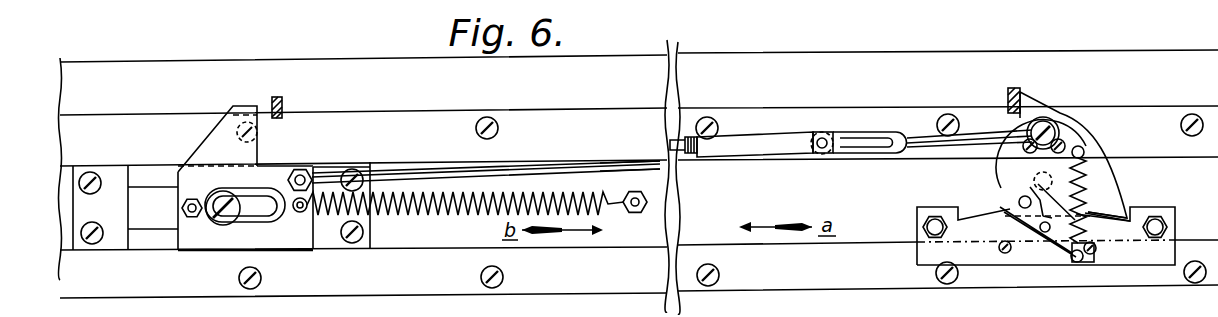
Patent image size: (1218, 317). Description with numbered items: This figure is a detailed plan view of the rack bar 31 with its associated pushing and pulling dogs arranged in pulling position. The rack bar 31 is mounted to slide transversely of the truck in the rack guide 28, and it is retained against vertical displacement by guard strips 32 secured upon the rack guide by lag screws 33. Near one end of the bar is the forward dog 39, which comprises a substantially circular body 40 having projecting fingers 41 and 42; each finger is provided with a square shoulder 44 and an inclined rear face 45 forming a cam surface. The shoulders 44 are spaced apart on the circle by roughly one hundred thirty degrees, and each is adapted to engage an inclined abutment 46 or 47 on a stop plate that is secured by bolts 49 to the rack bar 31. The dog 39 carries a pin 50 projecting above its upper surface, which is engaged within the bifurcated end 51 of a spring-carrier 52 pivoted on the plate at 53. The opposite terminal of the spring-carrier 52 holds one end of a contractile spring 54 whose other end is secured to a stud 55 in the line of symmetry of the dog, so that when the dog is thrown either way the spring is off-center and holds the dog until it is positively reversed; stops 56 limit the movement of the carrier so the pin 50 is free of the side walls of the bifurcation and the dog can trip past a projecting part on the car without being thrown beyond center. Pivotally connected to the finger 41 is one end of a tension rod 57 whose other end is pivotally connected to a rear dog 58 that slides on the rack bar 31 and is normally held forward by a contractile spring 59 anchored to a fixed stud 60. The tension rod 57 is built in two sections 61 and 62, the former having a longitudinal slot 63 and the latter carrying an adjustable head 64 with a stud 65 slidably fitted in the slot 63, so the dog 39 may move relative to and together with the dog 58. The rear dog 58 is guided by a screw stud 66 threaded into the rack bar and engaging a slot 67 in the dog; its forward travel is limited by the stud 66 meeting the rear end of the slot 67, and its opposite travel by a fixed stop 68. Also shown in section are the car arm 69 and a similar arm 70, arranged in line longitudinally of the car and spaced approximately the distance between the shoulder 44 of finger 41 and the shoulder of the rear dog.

The rack guide 28 is at (694, 64).
The rack bar 31 is at (797, 218).
The guard strips 32 is at (598, 122).
The lag screws 33 is at (710, 117).
The forward dog 39 is at (1046, 173).
The circular body 40 is at (1007, 176).
The finger 41 is at (1058, 112).
The finger 42 is at (1108, 214).
The square shoulder 44 is at (1012, 124).
The inclined rear face 45 is at (1055, 115).
The inclined abutment 46 is at (980, 222).
The inclined abutment 47 is at (1132, 224).
The bolts 49 is at (1165, 222).
The pin 50 is at (1018, 203).
The bifurcated end 51 is at (1032, 259).
The spring-carrier 52 is at (1076, 262).
The pivot 53 is at (1044, 232).
The contractile spring 54 is at (1104, 218).
The stud 55 is at (1084, 149).
The stops 56 is at (1002, 251).
The tension rod 57 is at (645, 163).
The rear dog 58 is at (310, 174).
The contractile spring 59 is at (417, 213).
The fixed stud 60 is at (648, 201).
The section 61 is at (922, 135).
The section 62 is at (540, 172).
The longitudinal slot 63 is at (865, 132).
The head 64 is at (738, 135).
The stud 65 is at (818, 130).
The screw stud 66 is at (277, 172).
The slot 67 is at (252, 218).
The fixed stop 68 is at (110, 176).
The arm 69 is at (284, 104).
The arm 70 is at (1015, 88).